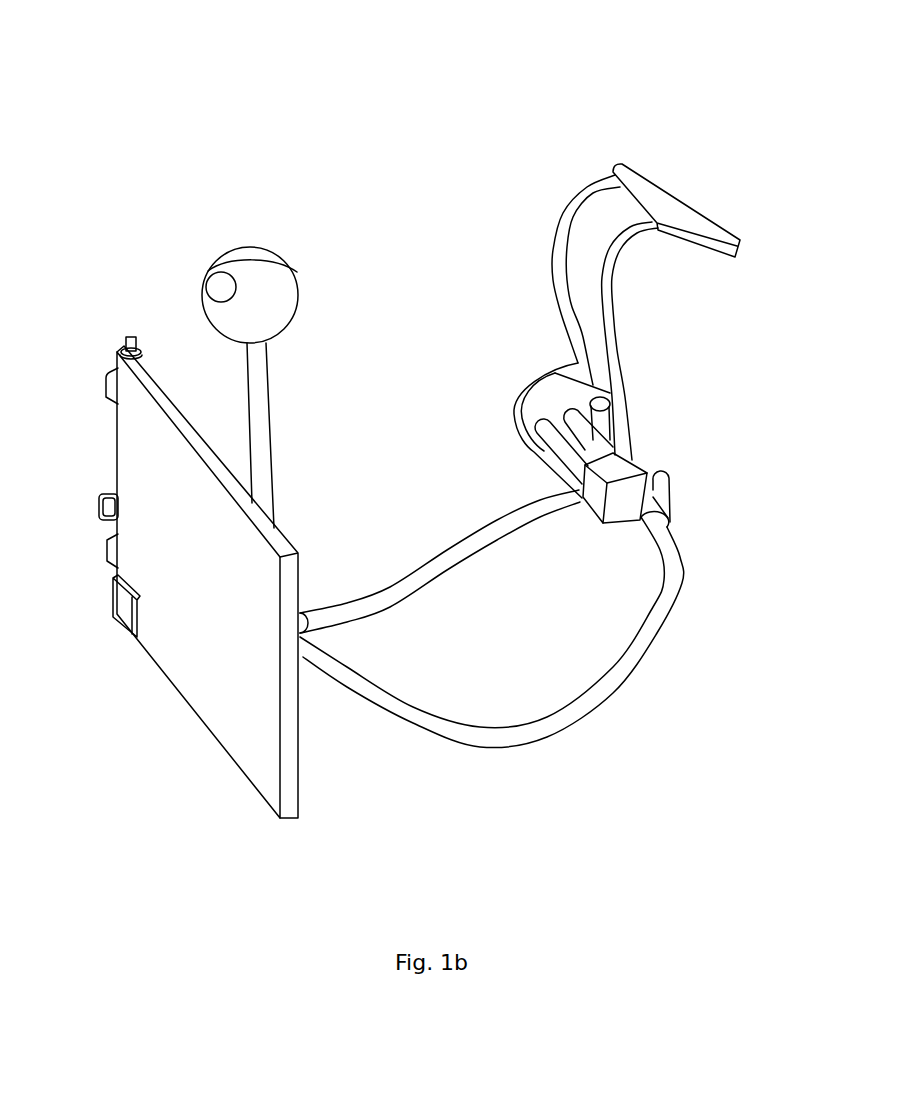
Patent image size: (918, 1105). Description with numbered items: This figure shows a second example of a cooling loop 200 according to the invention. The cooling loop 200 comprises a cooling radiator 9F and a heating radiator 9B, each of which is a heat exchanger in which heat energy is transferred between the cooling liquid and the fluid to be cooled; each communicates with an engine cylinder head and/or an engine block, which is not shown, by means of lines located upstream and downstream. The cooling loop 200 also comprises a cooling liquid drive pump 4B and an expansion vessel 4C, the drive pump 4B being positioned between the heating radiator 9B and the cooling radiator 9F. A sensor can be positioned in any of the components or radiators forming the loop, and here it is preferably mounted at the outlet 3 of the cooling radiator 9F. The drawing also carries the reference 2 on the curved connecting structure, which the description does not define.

The cooling loop 200 is at (466, 156).
The headband hoop 2 is at (346, 779).
The outlet 3 is at (78, 473).
The cooling radiator 9F is at (200, 646).
The expansion vessel 4C is at (247, 247).
The heating radiator 9B is at (714, 135).
The cooling liquid drive pump 4B is at (640, 462).